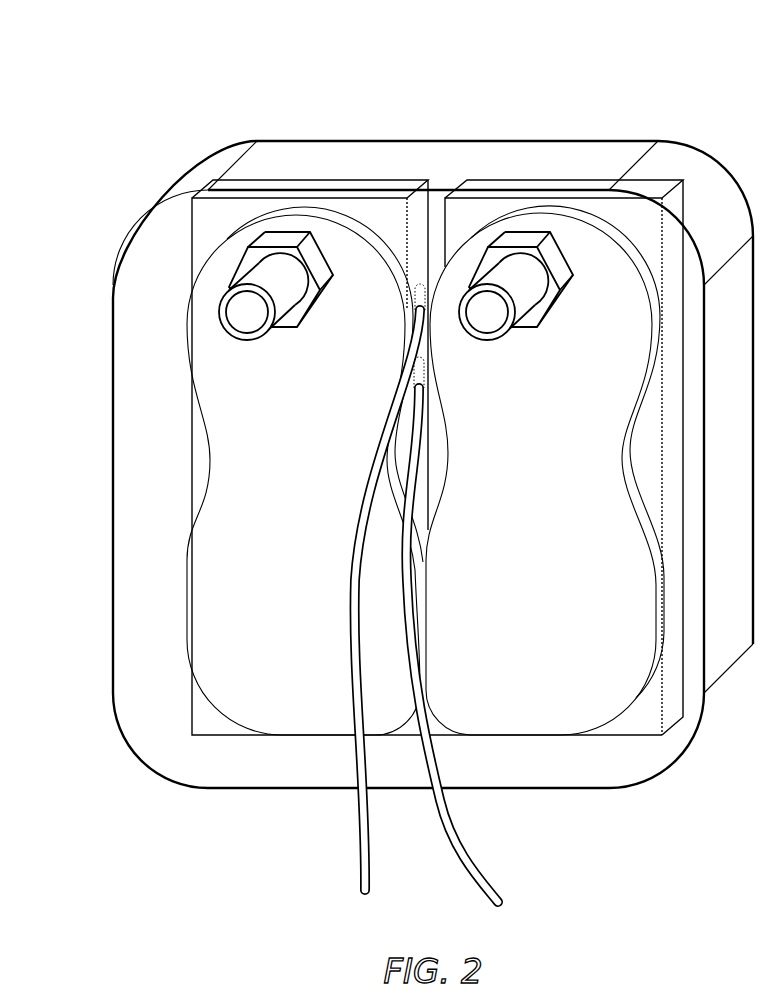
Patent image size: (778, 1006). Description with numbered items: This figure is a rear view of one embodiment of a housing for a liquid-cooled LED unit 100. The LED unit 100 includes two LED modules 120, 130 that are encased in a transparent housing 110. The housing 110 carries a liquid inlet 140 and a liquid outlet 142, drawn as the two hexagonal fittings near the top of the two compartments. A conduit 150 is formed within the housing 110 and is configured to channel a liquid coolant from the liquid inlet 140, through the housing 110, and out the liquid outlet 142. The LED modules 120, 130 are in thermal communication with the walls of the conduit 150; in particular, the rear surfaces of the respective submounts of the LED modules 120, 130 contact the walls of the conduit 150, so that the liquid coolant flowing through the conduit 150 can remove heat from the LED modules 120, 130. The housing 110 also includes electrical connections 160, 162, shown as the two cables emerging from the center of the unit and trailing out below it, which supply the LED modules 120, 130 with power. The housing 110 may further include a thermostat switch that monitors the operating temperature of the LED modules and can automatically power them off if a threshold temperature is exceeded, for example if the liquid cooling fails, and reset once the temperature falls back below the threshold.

The LED unit 100 is at (534, 85).
The transparent housing 110 is at (142, 670).
The LED module 120 is at (653, 188).
The LED module 130 is at (207, 222).
The liquid inlet 140 is at (243, 328).
The liquid outlet 142 is at (485, 328).
The conduit 150 is at (318, 702).
The electrical connection 160 is at (466, 872).
The electrical connection 162 is at (364, 876).